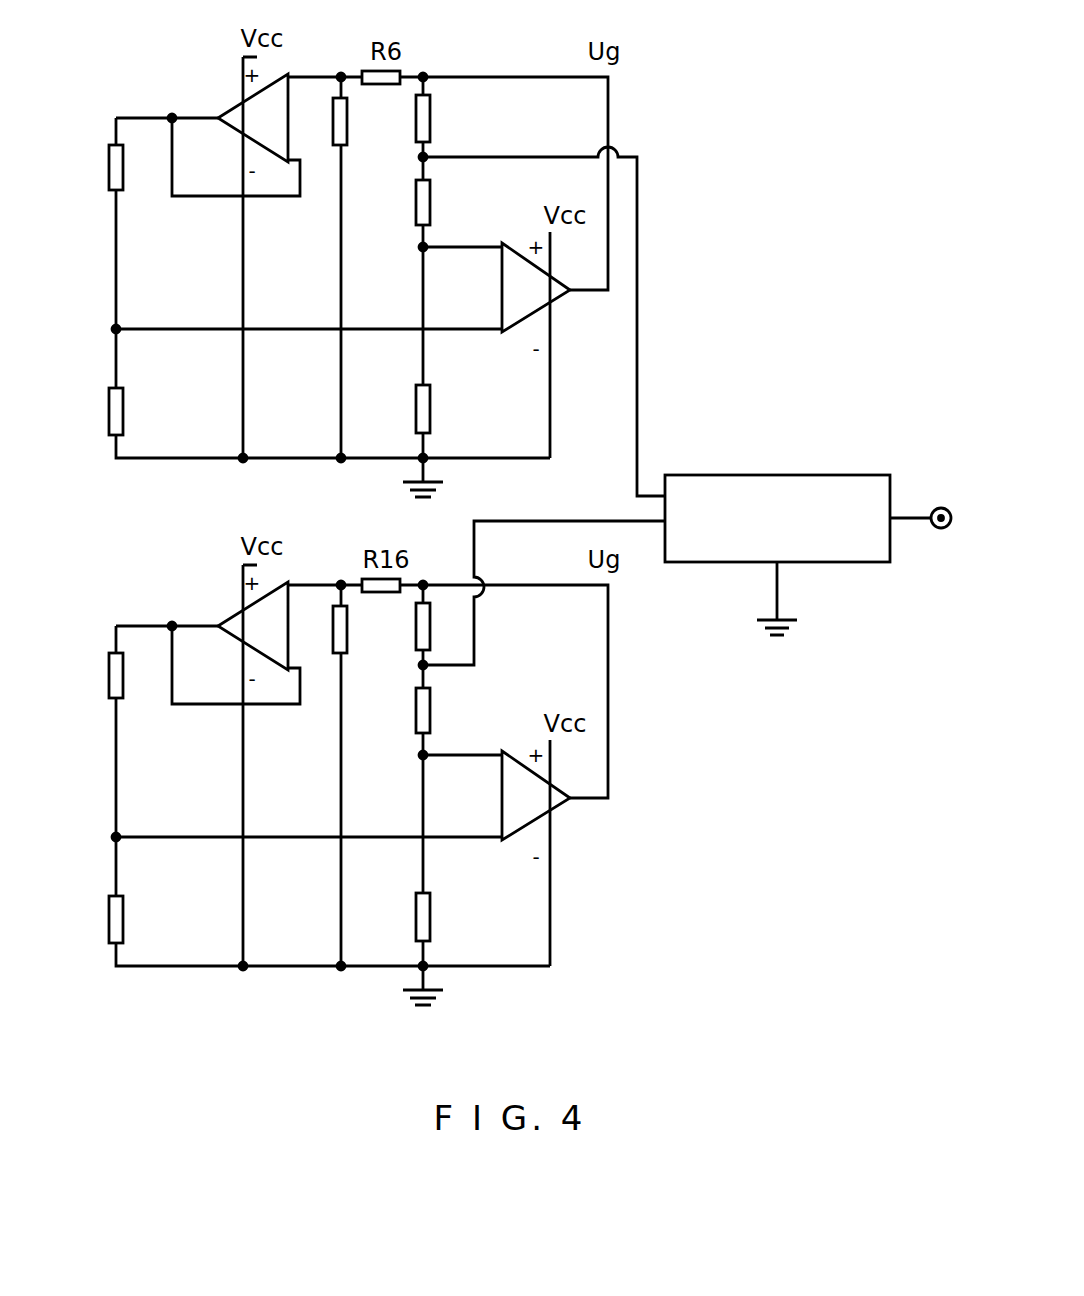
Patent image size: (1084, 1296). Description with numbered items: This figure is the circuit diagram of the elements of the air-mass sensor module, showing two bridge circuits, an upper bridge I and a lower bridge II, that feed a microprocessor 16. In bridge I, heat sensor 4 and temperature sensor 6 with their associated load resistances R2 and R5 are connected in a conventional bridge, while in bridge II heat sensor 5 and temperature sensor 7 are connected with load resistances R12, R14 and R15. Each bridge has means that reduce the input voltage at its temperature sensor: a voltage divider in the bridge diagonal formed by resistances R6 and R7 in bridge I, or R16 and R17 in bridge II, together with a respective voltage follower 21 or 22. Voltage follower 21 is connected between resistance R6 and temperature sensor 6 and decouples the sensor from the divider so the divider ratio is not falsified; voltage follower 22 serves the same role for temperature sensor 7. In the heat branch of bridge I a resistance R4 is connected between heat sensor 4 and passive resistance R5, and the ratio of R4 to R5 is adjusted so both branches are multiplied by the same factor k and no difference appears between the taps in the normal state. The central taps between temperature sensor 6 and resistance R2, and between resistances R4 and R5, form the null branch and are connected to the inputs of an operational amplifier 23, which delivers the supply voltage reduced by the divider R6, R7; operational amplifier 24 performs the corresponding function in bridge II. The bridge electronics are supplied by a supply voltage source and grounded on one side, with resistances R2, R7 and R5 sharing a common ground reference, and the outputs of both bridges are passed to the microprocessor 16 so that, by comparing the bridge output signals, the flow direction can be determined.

The heat sensor 4 is at (433, 118).
The heat sensor 5 is at (433, 626).
The temperature sensor 6 is at (104, 167).
The temperature sensor 7 is at (104, 675).
The microprocessor 16 is at (808, 555).
The voltage follower 21 is at (240, 118).
The voltage follower 22 is at (240, 626).
The operational amplifier 23 is at (551, 284).
The operational amplifier 24 is at (551, 792).
The load resistance R2 is at (135, 411).
The resistance R4 is at (443, 202).
The passive resistance R5 is at (443, 409).
The resistance R6 is at (381, 77).
The resistance R7 is at (359, 121).
The load resistance R12 is at (143, 919).
The resistance R14 is at (450, 710).
The load resistance R15 is at (450, 917).
The resistance R16 is at (381, 585).
The resistance R17 is at (367, 629).